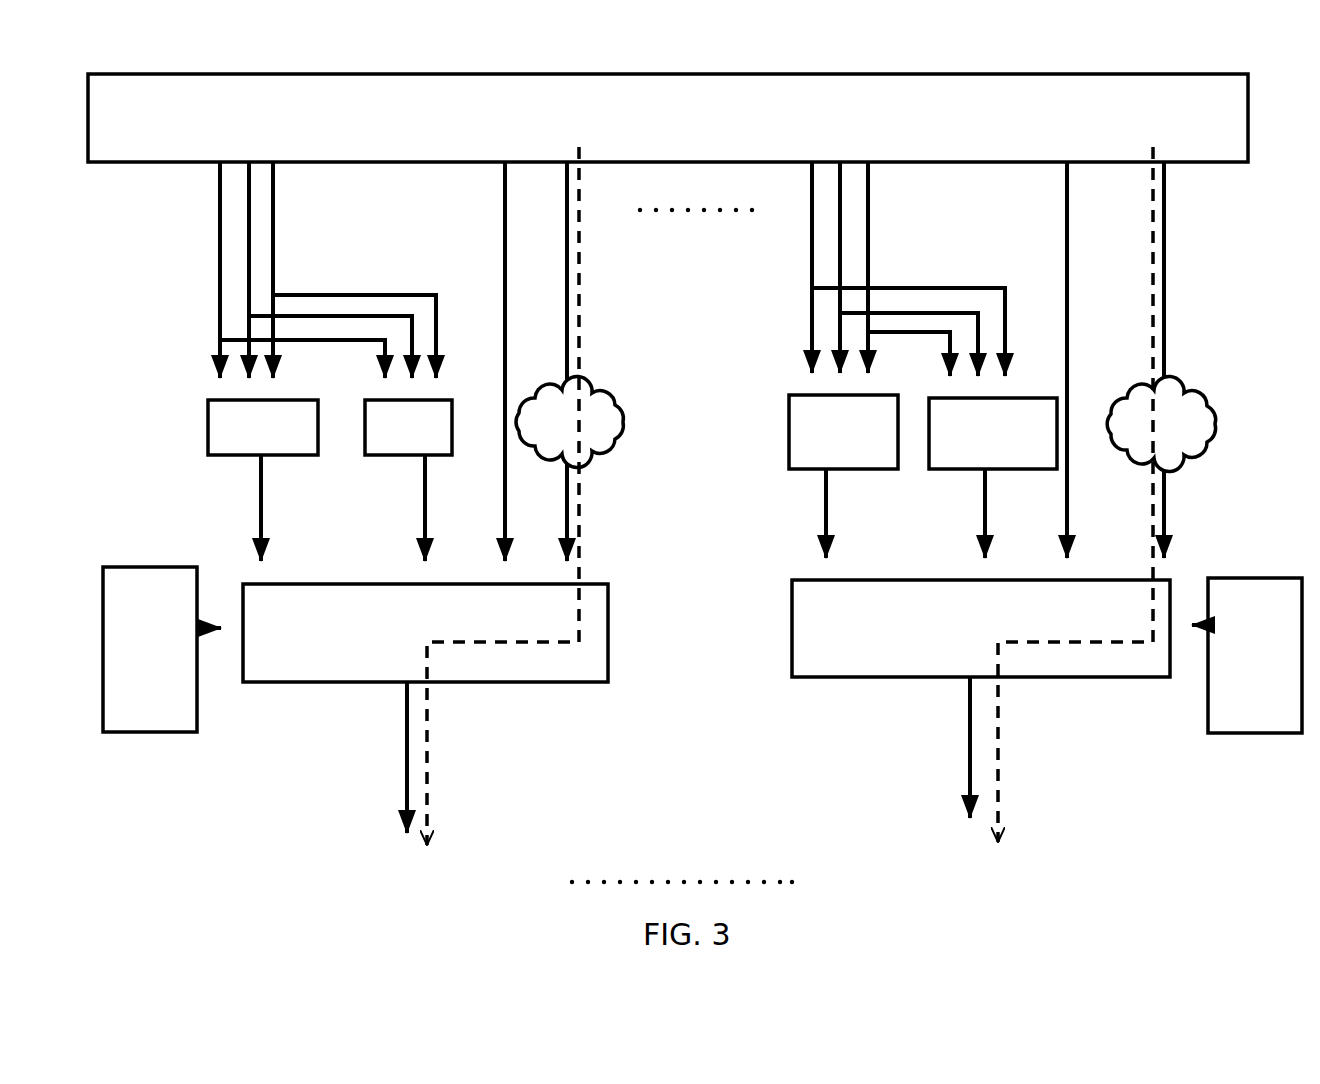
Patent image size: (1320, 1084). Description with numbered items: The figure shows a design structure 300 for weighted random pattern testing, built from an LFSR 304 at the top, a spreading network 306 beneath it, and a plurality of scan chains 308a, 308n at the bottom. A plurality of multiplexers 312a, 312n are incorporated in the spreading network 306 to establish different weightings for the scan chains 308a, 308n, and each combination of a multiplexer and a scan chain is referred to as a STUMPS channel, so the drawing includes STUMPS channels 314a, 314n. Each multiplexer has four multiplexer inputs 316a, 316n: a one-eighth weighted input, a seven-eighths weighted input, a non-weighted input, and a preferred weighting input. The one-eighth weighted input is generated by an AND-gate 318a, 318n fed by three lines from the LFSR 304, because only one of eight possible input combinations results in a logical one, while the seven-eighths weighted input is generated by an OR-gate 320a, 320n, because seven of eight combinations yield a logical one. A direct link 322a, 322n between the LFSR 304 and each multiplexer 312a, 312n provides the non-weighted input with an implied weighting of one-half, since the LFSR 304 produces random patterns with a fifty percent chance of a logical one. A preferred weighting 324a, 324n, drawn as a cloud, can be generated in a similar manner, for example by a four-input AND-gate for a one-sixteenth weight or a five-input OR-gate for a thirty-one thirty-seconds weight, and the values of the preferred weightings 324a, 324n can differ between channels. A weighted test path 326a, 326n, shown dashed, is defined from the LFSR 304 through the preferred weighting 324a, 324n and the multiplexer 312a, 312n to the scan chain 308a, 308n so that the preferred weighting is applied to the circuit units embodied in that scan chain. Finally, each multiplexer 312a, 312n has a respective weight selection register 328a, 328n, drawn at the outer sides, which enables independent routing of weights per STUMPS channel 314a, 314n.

The design structure 300 is at (158, 232).
The LFSR 304 is at (1020, 135).
The spreading network 306 is at (663, 358).
The scan chain 308a is at (375, 945).
The scan chain 308n is at (938, 929).
The multiplexer 312a is at (508, 683).
The multiplexer 312n is at (1068, 678).
The STUMPS channel 314a is at (376, 719).
The STUMPS channel 314n is at (931, 706).
The multiplexer inputs 316a is at (226, 543).
The multiplexer inputs 316n is at (786, 566).
The AND-gate 318a is at (208, 442).
The AND-gate 318n is at (805, 470).
The OR-gate 320a is at (365, 455).
The OR-gate 320n is at (968, 470).
The direct link 322a is at (503, 270).
The direct link 322n is at (1065, 262).
The preferred weighting 324a is at (620, 423).
The preferred weighting 324n is at (1215, 402).
The weighted test path 326a is at (430, 758).
The weighted test path 326n is at (1000, 752).
The weight selection register 328a is at (118, 735).
The weight selection register 328n is at (1253, 735).